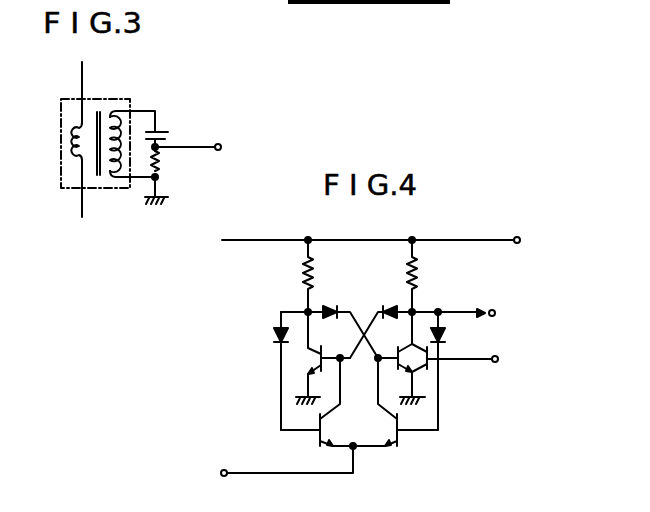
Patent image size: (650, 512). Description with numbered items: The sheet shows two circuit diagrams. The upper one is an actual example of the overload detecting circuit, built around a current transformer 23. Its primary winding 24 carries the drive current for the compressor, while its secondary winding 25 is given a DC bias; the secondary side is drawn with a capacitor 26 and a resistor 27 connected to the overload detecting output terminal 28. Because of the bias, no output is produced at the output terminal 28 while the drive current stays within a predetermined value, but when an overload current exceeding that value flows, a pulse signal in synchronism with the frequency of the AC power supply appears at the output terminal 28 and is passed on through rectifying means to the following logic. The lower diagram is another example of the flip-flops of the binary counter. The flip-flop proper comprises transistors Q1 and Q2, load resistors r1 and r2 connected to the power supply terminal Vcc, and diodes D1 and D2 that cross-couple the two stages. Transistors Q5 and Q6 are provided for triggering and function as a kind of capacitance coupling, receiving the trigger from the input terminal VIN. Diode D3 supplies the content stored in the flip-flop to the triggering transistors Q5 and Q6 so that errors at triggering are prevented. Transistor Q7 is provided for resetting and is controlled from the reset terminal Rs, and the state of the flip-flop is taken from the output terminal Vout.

In FIG. 3, the current transformer 23 is at (106, 98).
In FIG. 3, the primary winding 24 is at (81, 83).
In FIG. 3, the secondary winding 25 is at (121, 177).
In FIG. 3, the capacitor 26 is at (164, 135).
In FIG. 3, the resistor 27 is at (162, 165).
In FIG. 3, the overload detecting output terminal 28 is at (221, 147).
In FIG. 4, the load resistor r1 is at (303, 274).
In FIG. 4, the load resistor r2 is at (418, 271).
In FIG. 4, the diode D1 is at (331, 309).
In FIG. 4, the diode D2 is at (390, 309).
In FIG. 4, the diode D3 is at (276, 338).
In FIG. 4, the transistor Q1 is at (318, 351).
In FIG. 4, the transistor Q2 is at (402, 366).
In FIG. 4, the transistor Q5 is at (325, 437).
In FIG. 4, the transistor Q6 is at (388, 437).
In FIG. 4, the transistor Q7 is at (425, 366).
In FIG. 4, the power supply terminal Vcc is at (528, 233).
In FIG. 4, the output terminal Vout is at (496, 313).
In FIG. 4, the reset terminal Rs is at (499, 359).
In FIG. 4, the input terminal VIN is at (220, 473).